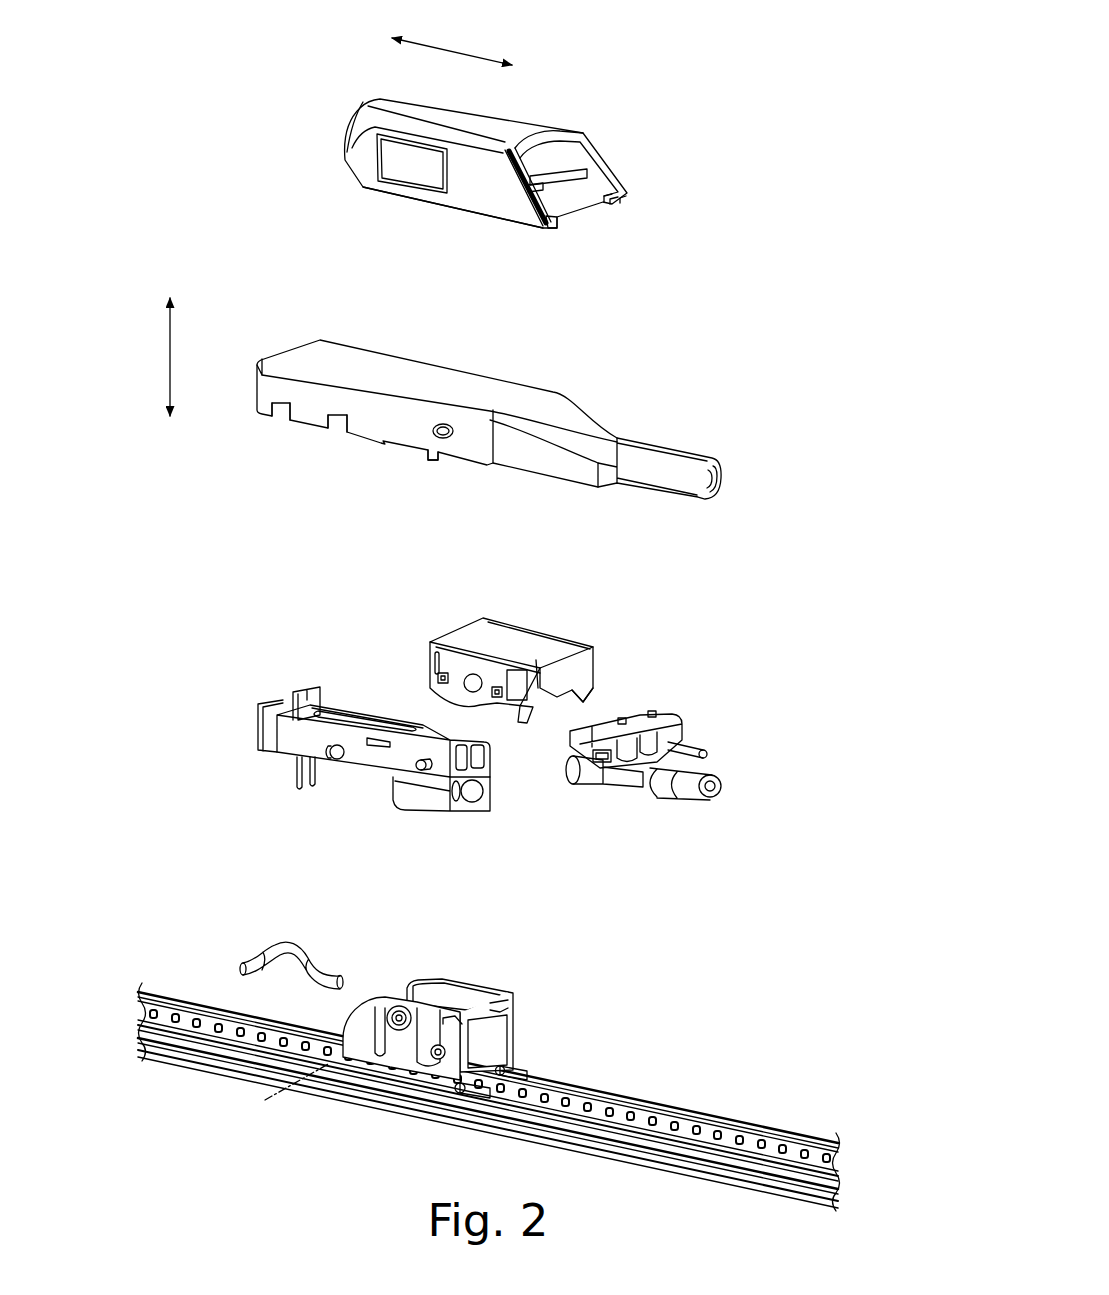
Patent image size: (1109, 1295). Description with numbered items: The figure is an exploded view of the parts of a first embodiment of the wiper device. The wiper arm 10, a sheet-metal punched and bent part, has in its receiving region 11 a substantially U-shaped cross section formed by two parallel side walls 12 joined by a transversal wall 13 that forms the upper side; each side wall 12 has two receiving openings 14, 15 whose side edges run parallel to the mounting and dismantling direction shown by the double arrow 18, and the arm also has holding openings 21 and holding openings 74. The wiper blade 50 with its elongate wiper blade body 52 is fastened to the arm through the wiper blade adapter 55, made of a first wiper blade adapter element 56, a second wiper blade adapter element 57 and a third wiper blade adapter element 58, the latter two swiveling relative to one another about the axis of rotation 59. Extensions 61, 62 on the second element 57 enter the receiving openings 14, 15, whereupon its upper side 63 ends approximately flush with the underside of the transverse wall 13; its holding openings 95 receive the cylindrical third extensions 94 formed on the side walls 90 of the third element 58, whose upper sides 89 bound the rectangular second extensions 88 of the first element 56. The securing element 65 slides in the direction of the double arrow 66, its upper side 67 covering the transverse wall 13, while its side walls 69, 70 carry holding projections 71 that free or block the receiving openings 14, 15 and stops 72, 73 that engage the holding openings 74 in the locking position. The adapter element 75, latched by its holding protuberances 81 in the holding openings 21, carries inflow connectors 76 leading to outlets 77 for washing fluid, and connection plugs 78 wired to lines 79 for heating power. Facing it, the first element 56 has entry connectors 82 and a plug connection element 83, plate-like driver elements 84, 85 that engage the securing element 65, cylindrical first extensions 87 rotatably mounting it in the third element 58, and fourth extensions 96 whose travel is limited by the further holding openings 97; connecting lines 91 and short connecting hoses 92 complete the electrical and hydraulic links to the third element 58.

The wiper arm 10 is at (683, 447).
The receiving region 11 is at (466, 408).
The side walls 12 is at (277, 388).
The transversal wall 13 is at (375, 372).
The receiving opening 14 is at (281, 415).
The receiving opening 15 is at (336, 432).
The double arrow 18 is at (168, 378).
The holding openings 21 is at (443, 425).
The wiper blade 50 is at (489, 1097).
The wiper blade body 52 is at (723, 1120).
The wiper blade adapter 55 is at (434, 1022).
The first wiper blade adapter element 56 is at (361, 729).
The second wiper blade adapter element 57 is at (504, 636).
The third wiper blade adapter element 58 is at (470, 1039).
The axis of rotation 59 is at (275, 1100).
The extension 61 is at (442, 677).
The extension 62 is at (493, 690).
The upper side 63 is at (493, 634).
The securing element 65 is at (523, 159).
The double arrow 66 is at (478, 57).
The upper side 67 is at (400, 117).
The side wall 69 is at (487, 198).
The side wall 70 is at (597, 172).
The holding projections 71 is at (535, 183).
The stop 72 is at (553, 220).
The stop 73 is at (627, 194).
The holding openings 74 is at (432, 455).
The adapter element 75 is at (670, 752).
The inflow connectors 76 is at (718, 787).
The outlets 77 is at (585, 770).
The connection plugs 78 is at (585, 730).
The lines 79 is at (682, 748).
The holding protuberance 81 is at (602, 763).
The entry connectors 82 is at (472, 793).
The plug connection element 83 is at (490, 753).
The driver element 84 is at (257, 726).
The driver element 85 is at (300, 694).
The first extension 87 is at (330, 750).
The second extensions 88 is at (380, 737).
The upper sides 89 is at (480, 986).
The side walls 90 is at (421, 1040).
The connecting lines 91 is at (296, 775).
The connecting hoses 92 is at (288, 947).
The third extensions 94 is at (437, 1060).
The holding openings 95 is at (581, 683).
The fourth extensions 96 is at (420, 766).
The further holding openings 97 is at (510, 1012).